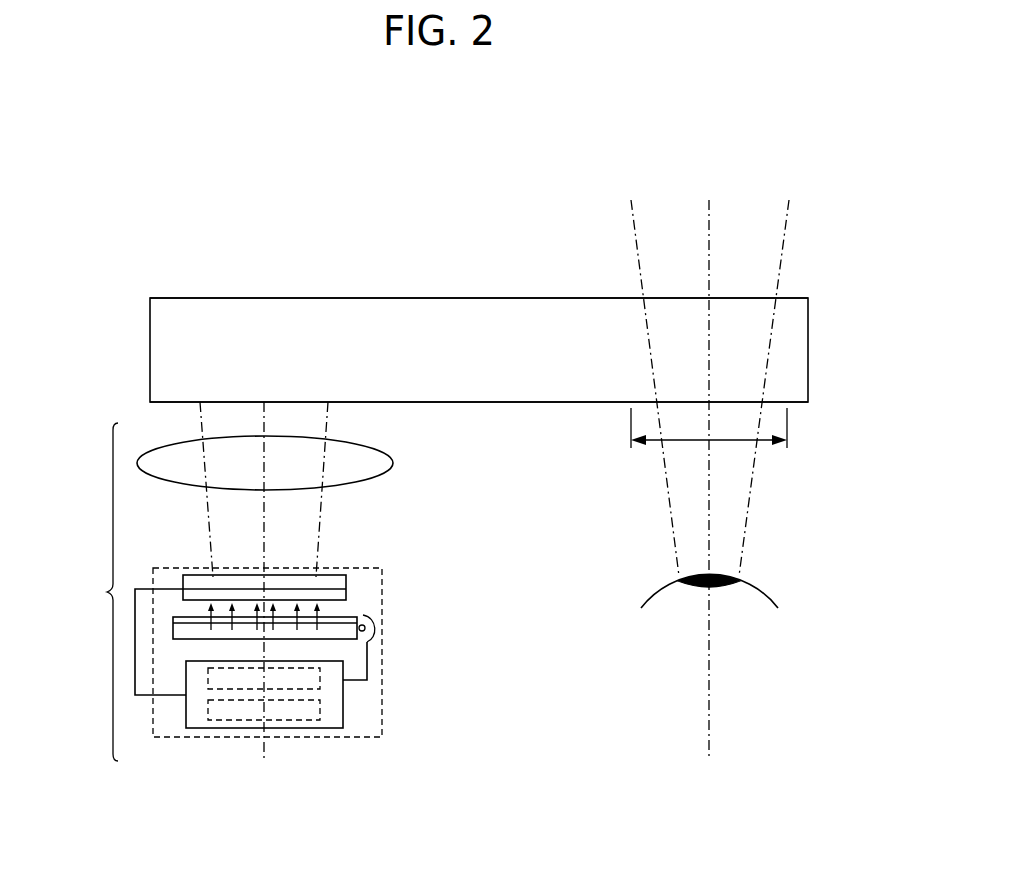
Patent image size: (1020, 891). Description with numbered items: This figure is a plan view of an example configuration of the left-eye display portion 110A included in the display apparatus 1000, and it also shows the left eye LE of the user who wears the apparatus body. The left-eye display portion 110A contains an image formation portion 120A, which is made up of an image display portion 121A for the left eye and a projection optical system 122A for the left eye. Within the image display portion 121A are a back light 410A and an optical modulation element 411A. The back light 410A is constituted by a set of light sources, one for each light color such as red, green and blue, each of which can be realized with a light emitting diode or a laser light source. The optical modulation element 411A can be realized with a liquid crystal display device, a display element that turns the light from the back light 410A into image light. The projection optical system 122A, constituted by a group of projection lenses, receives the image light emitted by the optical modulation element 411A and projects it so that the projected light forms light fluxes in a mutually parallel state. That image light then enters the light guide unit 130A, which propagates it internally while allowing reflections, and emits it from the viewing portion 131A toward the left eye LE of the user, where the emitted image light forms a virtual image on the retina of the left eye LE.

The display apparatus 1000 is at (370, 223).
The left-eye display portion 110A is at (254, 262).
The light guide unit 130A is at (179, 312).
The image formation portion 120A is at (82, 592).
The projection optical system 122A is at (385, 462).
The image display portion 121A is at (382, 705).
The optical modulation element 411A is at (188, 582).
The back light 410A is at (373, 628).
The viewing portion 131A is at (652, 446).
The left eye LE is at (760, 588).